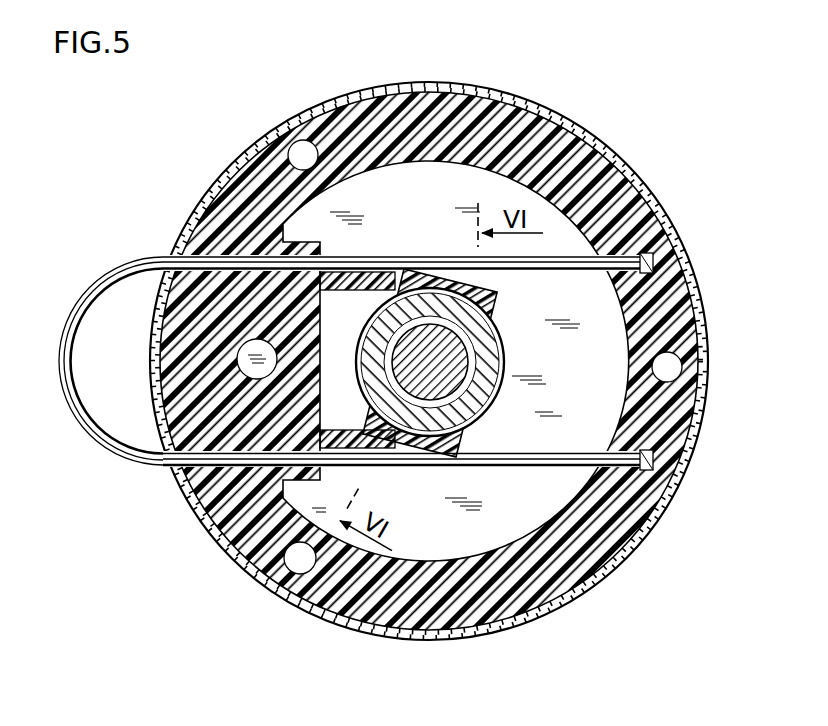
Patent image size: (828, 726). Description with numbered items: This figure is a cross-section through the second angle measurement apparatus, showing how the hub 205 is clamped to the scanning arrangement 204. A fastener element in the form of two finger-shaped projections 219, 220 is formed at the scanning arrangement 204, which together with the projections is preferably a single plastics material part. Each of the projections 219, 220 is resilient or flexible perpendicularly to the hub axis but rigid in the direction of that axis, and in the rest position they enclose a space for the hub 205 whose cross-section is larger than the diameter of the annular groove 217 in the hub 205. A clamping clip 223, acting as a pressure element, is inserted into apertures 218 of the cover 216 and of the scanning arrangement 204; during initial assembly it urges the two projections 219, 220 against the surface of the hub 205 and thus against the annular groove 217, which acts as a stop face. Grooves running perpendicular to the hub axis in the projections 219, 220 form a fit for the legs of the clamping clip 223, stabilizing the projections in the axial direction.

The scanning arrangement 204 is at (607, 540).
The hub 205 is at (480, 338).
The cover 216 is at (222, 538).
The annular groove 217 is at (358, 408).
The apertures 218 is at (225, 225).
The finger-shaped projection 219 is at (400, 292).
The finger-shaped projection 220 is at (445, 445).
The clamping clip 223 is at (132, 268).